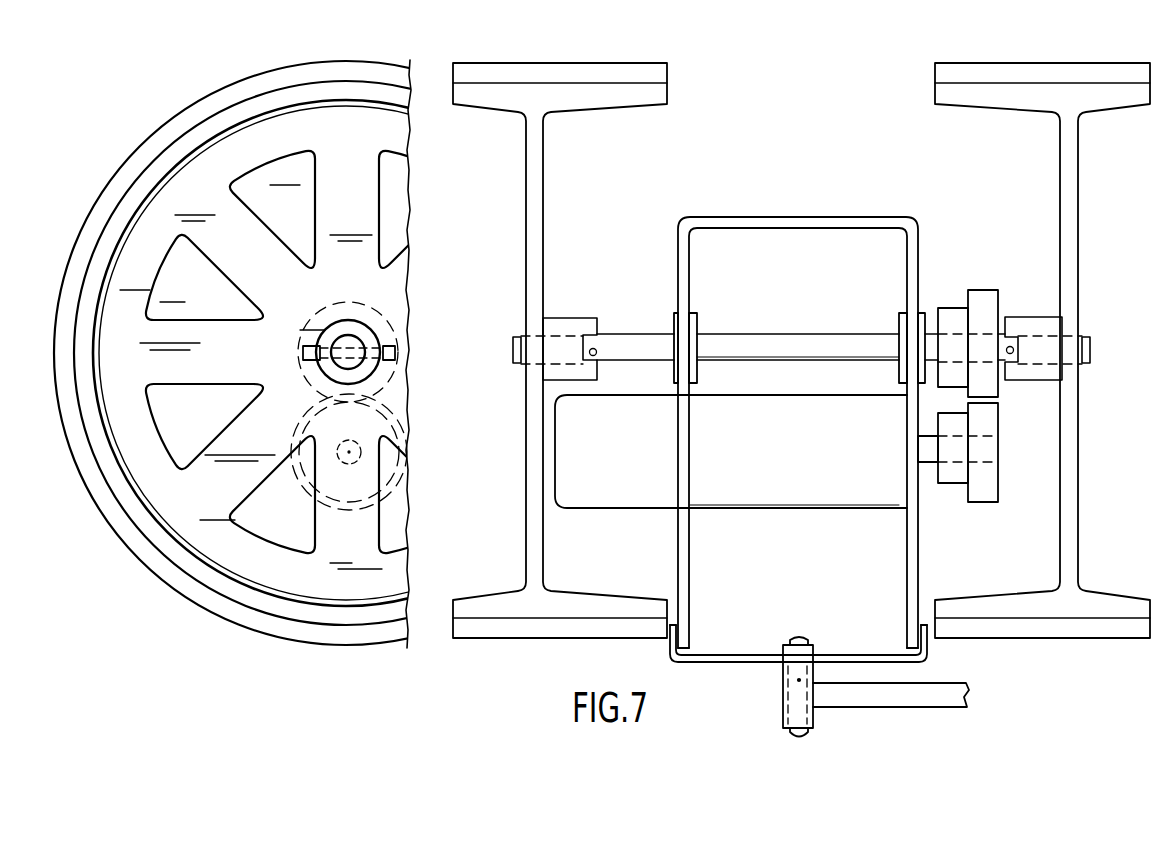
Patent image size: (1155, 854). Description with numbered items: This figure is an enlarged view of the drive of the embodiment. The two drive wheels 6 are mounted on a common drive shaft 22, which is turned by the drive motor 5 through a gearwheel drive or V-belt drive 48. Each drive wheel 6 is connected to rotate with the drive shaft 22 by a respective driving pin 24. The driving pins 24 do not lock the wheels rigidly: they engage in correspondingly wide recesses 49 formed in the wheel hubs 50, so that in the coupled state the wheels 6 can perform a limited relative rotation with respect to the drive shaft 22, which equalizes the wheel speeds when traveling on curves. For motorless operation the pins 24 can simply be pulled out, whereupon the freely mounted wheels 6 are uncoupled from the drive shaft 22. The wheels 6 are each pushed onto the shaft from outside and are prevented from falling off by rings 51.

The drive motor 5 is at (607, 490).
The drive wheels 6 is at (530, 174).
The drive shaft 22 is at (637, 346).
The driving pin 24 is at (387, 340).
The gearwheel drive or V-belt drive 48 is at (1006, 406).
The recesses 49 is at (380, 362).
The wheel hubs 50 is at (362, 326).
The rings 51 is at (1090, 336).